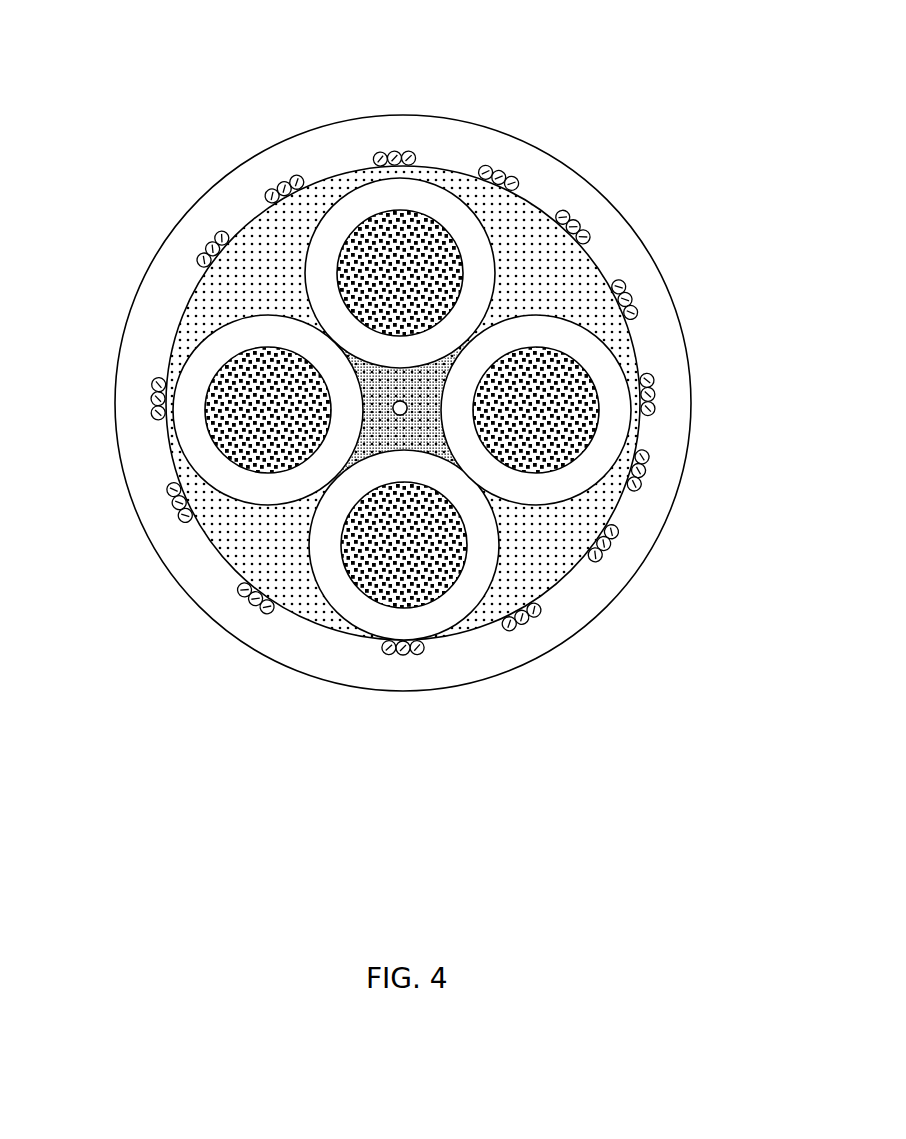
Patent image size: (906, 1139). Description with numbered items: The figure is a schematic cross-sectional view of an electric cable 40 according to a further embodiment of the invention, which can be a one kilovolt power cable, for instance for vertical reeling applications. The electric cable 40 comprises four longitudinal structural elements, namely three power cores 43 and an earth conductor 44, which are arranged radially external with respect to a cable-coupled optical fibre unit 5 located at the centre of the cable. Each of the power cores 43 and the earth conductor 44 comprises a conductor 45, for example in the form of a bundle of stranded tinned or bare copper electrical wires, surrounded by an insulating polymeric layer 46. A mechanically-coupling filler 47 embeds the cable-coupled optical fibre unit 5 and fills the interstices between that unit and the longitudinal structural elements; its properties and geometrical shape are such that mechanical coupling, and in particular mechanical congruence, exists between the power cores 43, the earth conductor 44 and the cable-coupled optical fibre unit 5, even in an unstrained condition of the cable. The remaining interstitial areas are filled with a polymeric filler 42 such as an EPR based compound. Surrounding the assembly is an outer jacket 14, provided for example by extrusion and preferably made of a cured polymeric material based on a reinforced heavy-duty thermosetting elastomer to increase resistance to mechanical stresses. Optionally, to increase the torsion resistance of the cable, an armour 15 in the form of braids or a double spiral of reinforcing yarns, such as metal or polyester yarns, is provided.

The electric cable 40 is at (405, 392).
The outer jacket 14 is at (377, 668).
The filler material 42 is at (228, 286).
The mechanically-coupling filler 47 is at (429, 441).
The insulating polymeric layer 46 is at (612, 438).
The conductor 45 is at (383, 240).
The cable-coupled optical fibre unit 5 is at (392, 403).
The power cores 43 is at (423, 173).
The armour 15 is at (288, 178).
The earth conductor 44 is at (621, 359).